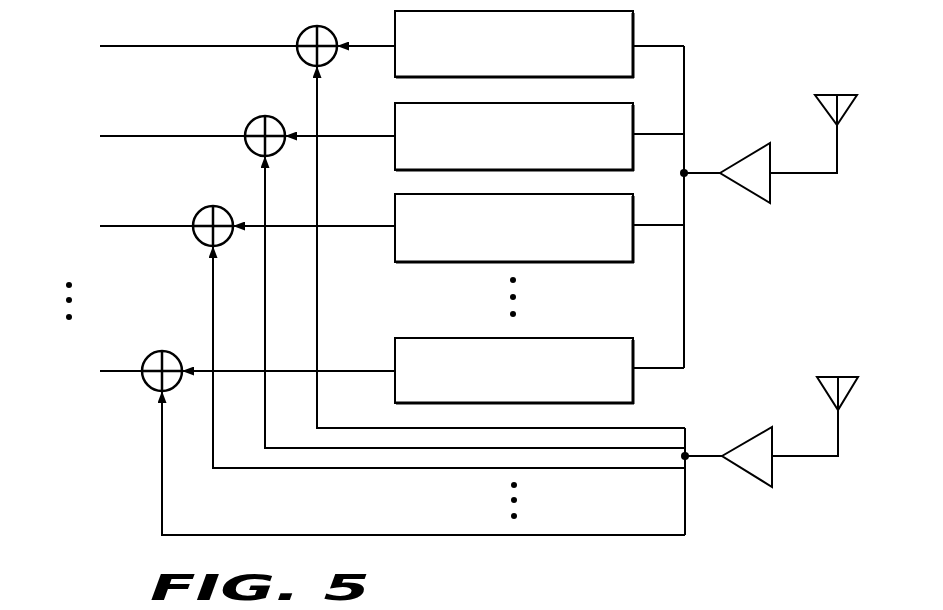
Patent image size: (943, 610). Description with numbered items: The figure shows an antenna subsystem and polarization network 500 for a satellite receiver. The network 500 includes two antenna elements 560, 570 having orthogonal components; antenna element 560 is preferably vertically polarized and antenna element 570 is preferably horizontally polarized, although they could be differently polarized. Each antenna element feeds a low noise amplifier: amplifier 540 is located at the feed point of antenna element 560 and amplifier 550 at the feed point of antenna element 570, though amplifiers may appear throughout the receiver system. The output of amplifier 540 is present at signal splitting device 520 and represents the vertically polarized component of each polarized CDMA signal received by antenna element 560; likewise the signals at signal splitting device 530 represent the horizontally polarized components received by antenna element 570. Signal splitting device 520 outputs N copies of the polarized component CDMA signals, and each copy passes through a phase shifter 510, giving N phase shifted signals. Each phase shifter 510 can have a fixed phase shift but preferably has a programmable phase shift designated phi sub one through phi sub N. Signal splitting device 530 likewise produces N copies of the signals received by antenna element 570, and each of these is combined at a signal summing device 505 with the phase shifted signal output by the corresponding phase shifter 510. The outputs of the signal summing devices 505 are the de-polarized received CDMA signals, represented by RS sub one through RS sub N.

The antenna subsystem and polarization network 500 is at (80, 588).
The signal summing device 505 is at (303, 33).
The phase shifter 510 is at (395, 77).
The signal splitting device 520 is at (686, 176).
The signal splitting device 530 is at (688, 459).
The amplifier 540 is at (745, 158).
The amplifier 550 is at (748, 442).
The antenna element 560 is at (847, 95).
The antenna element 570 is at (849, 377).